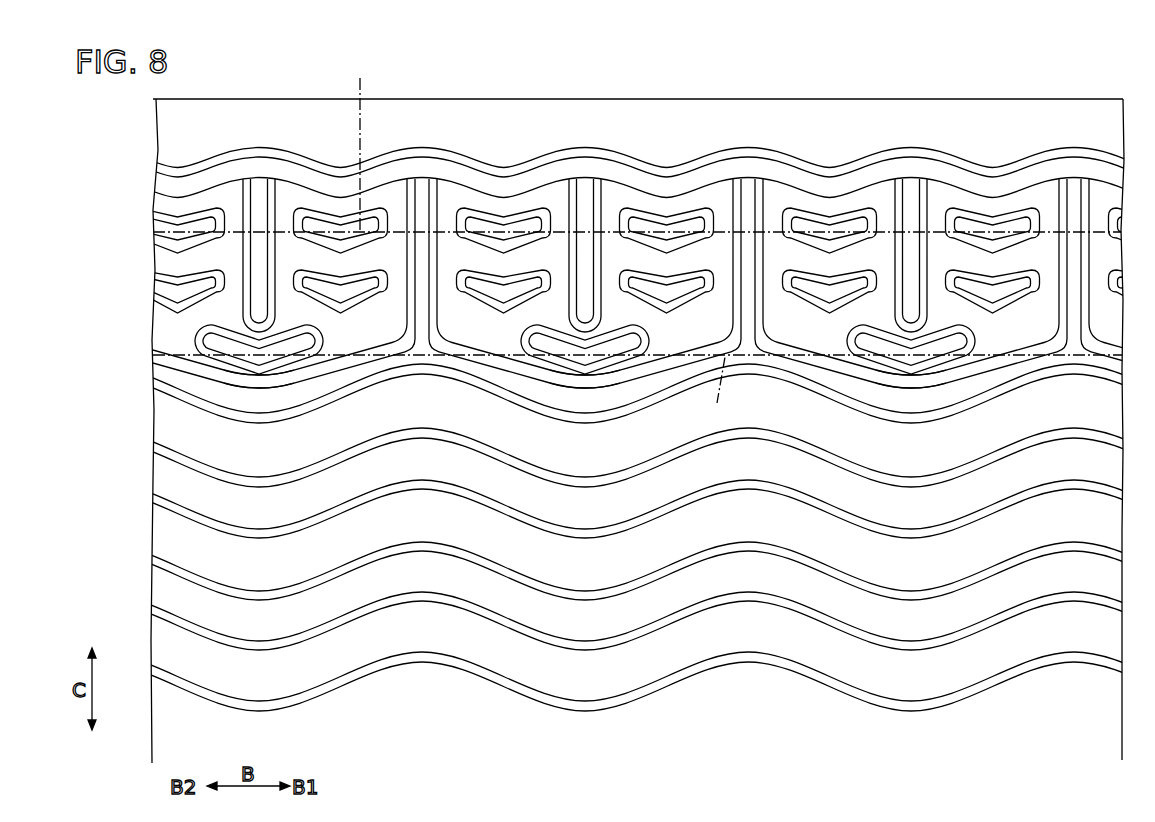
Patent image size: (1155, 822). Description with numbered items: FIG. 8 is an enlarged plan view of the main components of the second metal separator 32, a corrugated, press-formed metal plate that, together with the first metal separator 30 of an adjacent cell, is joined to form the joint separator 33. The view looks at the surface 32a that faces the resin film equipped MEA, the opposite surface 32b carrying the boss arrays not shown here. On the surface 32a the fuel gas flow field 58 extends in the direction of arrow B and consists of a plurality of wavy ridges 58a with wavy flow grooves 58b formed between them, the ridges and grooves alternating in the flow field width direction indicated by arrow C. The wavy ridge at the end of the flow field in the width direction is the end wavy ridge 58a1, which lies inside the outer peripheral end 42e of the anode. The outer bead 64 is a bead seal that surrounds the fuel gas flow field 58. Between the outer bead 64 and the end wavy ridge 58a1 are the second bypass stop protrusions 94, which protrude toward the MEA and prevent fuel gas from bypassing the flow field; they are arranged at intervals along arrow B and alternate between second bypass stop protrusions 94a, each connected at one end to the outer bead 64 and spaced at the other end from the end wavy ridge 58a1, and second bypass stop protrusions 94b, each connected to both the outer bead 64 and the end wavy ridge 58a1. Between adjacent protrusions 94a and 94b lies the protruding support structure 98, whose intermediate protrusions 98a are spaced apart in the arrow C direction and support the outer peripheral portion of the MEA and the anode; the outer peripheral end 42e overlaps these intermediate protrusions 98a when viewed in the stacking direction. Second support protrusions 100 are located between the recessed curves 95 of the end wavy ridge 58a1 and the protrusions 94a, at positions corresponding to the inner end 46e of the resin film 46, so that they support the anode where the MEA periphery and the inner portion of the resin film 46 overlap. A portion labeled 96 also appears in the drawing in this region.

The first metal separator 30 is at (1055, 98).
The second metal separator 32 is at (1020, 98).
The surface 32a is at (835, 117).
The surface 32b is at (872, 119).
The joint separator 33 is at (262, 67).
The outer peripheral end of the anode 42e is at (364, 140).
The resin film 46 is at (693, 393).
The inner end of the resin film 46e is at (693, 393).
The fuel gas flow field 58 is at (625, 537).
The wavy ridges 58a is at (625, 526).
The end wavy ridges 58a1 is at (1034, 367).
The wavy flow grooves 58b is at (812, 432).
The outer bead 64 is at (862, 180).
The second bypass stop protrusions 94 is at (577, 242).
The second bypass stop protrusions 94a is at (258, 190).
The second bypass stop protrusions 94b is at (422, 190).
The recessed curves 95 is at (582, 407).
The branch portion 96 is at (422, 350).
The protruding support structure 98 is at (471, 207).
The intermediate protrusions 98a is at (515, 291).
The second support protrusions 100 is at (597, 360).